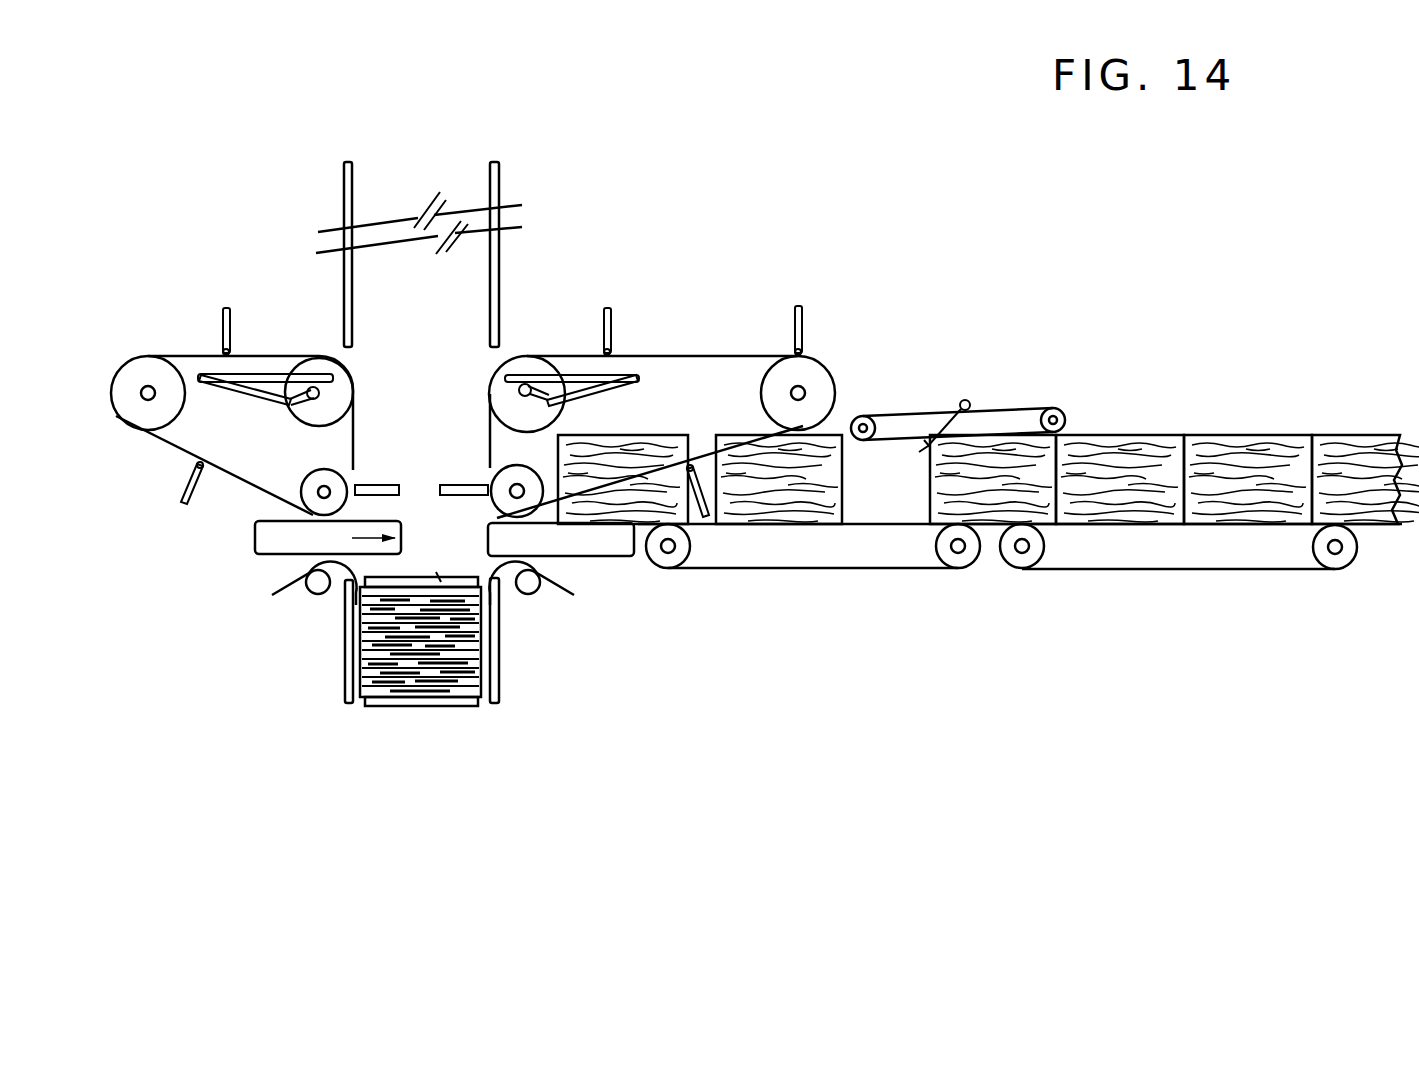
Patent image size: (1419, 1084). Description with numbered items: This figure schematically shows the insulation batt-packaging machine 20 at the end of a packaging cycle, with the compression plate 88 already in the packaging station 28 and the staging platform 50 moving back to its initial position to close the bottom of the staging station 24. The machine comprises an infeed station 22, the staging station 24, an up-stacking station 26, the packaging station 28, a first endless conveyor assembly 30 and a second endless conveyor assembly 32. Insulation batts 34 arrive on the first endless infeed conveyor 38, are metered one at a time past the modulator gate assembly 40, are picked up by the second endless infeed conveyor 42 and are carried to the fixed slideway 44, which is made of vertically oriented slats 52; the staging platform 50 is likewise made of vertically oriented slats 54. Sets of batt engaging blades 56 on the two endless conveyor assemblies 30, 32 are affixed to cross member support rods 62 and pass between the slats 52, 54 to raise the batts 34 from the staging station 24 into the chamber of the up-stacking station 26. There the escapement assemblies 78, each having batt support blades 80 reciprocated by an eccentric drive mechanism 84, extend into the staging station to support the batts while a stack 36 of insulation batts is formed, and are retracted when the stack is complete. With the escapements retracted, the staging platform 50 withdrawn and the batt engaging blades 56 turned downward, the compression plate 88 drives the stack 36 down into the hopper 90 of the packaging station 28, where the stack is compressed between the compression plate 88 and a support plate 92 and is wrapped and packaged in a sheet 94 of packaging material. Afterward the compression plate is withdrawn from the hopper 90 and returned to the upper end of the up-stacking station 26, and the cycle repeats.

The packaging machine 20 is at (990, 185).
The infeed station 22 is at (900, 360).
The staging station 24 is at (512, 340).
The up-stacking station 26 is at (535, 155).
The packaging station 28 is at (320, 720).
The first endless conveyor assembly 30 is at (745, 305).
The second endless conveyor assembly 32 is at (183, 335).
The insulation batt 34 is at (1381, 488).
The stack of insulation batts 36 is at (418, 655).
The first endless infeed conveyor 38 is at (1172, 574).
The modulator gate assembly 40 is at (993, 395).
The second endless infeed conveyor 42 is at (855, 572).
The slideway 44 is at (593, 562).
The staging platform 50 is at (243, 548).
The vertically oriented slats of slideway 52 is at (580, 555).
The vertically oriented slats of staging platform 54 is at (340, 553).
The batt engaging blades 56 is at (226, 306).
The cross member support rod 62 is at (395, 484).
The escapement assembly 78 is at (240, 396).
The batt support blades 80 is at (270, 373).
The eccentric drive mechanism 84 is at (284, 410).
The compression plate 88 is at (438, 578).
The hopper 90 is at (502, 680).
The support plate 92 is at (432, 706).
The sheet of packaging material 94 is at (320, 596).